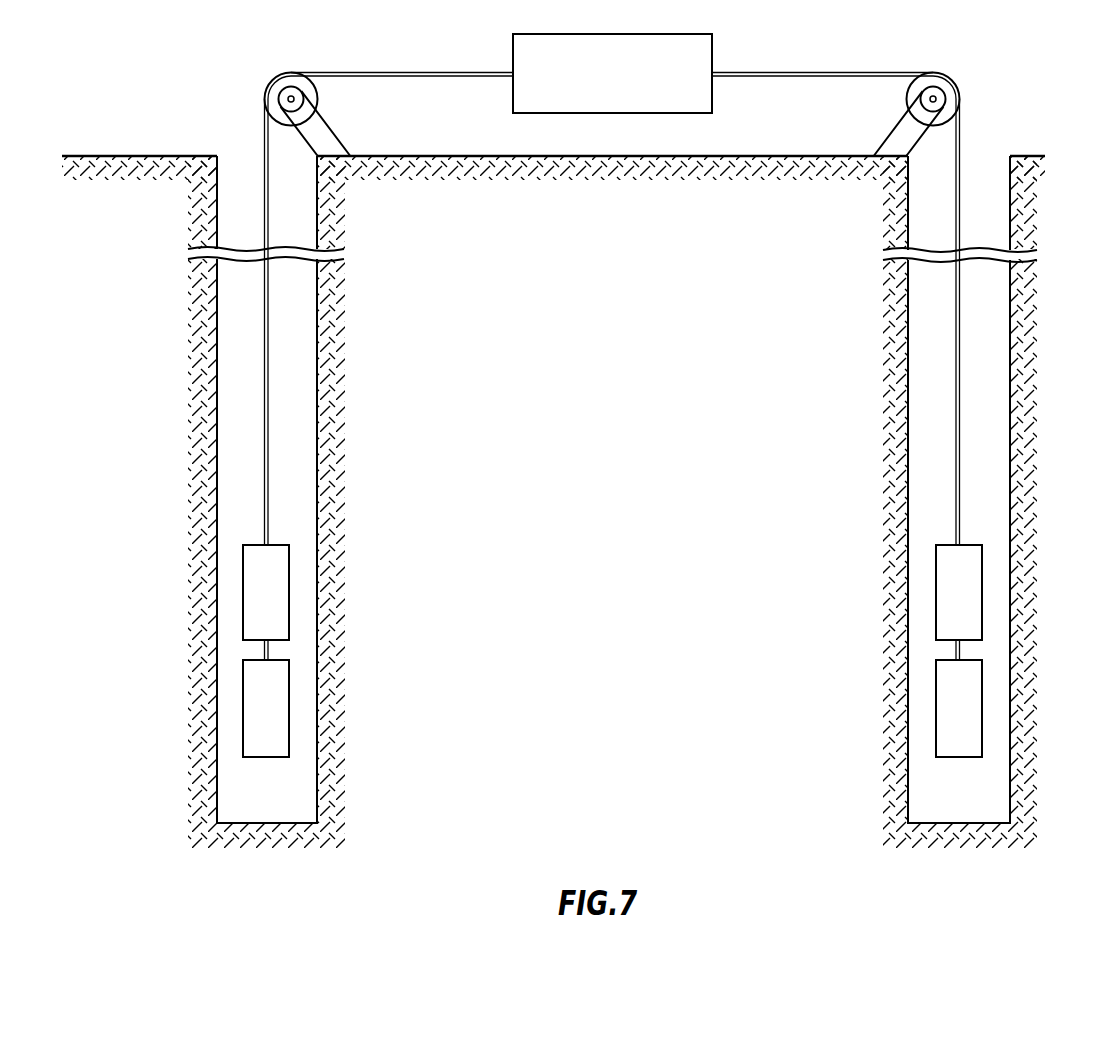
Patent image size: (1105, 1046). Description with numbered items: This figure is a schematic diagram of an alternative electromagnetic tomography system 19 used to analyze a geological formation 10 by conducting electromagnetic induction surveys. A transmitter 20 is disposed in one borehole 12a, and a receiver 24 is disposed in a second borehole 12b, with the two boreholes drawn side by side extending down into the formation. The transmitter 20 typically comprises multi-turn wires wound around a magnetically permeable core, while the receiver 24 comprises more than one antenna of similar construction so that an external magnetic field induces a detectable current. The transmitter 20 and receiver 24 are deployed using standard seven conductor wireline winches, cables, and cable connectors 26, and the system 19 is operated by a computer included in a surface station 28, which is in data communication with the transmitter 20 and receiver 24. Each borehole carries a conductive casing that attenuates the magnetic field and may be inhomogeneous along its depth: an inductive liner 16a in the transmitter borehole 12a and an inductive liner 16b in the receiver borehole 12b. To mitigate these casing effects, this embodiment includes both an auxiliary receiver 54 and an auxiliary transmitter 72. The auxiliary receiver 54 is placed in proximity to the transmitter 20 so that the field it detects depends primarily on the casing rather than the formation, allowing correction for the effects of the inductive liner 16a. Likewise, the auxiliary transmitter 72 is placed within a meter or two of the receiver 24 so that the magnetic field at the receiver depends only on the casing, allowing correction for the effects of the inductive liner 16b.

The geological formation 10 is at (769, 241).
The borehole 12a is at (292, 332).
The borehole 12b is at (932, 334).
The inductive liner 16a is at (316, 375).
The inductive liner 16b is at (908, 377).
The system 19 is at (489, 60).
The transmitter 20 is at (252, 607).
The receiver 24 is at (944, 607).
The wireline winches, cables, and cable connectors 26 is at (259, 93).
The surface station 28 is at (627, 88).
The auxiliary receiver 54 is at (252, 724).
The auxiliary transmitter 72 is at (944, 724).